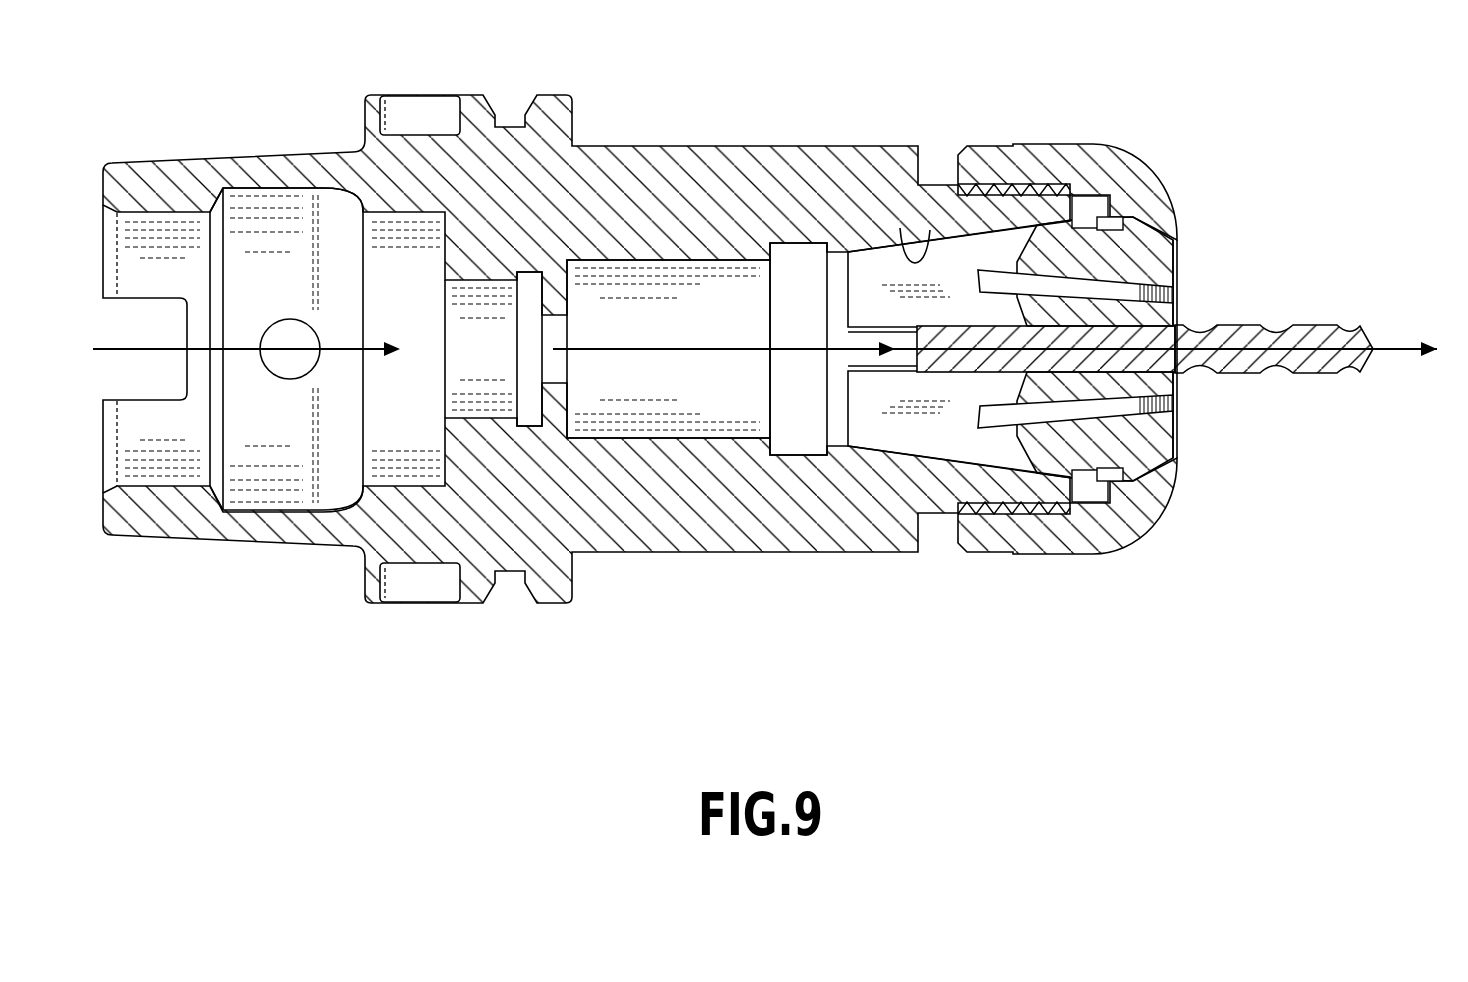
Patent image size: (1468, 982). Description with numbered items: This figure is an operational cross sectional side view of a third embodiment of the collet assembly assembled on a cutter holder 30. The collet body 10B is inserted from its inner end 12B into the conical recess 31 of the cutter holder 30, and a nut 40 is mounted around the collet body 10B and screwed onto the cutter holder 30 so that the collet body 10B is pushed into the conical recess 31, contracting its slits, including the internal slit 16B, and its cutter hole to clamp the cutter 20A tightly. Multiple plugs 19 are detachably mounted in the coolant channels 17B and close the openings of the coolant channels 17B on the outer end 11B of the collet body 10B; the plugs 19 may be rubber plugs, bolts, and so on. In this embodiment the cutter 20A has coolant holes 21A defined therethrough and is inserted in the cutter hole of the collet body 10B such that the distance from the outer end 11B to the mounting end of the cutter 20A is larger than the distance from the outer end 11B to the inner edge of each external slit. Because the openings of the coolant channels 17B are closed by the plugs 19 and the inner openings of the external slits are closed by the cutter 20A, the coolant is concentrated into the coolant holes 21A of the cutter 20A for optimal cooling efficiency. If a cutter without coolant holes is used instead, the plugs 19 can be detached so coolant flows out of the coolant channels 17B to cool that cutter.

The cutter holder 30 is at (723, 112).
The conical recess 31 is at (903, 236).
The nut 40 is at (1176, 178).
The coolant channels 17B is at (1128, 287).
The plugs 19 is at (1173, 294).
The inner end 12B is at (848, 278).
The internal slit 16B is at (893, 425).
The outer end 11B is at (1177, 433).
The collet body 10B is at (1143, 457).
The cutter 20A is at (1282, 387).
The coolant holes 21A is at (1358, 356).